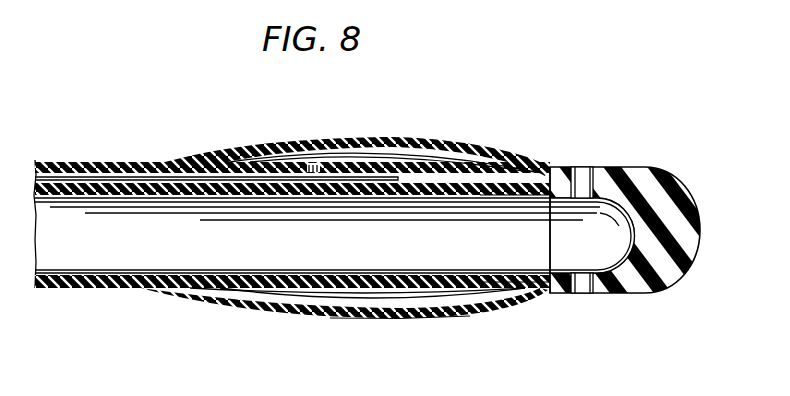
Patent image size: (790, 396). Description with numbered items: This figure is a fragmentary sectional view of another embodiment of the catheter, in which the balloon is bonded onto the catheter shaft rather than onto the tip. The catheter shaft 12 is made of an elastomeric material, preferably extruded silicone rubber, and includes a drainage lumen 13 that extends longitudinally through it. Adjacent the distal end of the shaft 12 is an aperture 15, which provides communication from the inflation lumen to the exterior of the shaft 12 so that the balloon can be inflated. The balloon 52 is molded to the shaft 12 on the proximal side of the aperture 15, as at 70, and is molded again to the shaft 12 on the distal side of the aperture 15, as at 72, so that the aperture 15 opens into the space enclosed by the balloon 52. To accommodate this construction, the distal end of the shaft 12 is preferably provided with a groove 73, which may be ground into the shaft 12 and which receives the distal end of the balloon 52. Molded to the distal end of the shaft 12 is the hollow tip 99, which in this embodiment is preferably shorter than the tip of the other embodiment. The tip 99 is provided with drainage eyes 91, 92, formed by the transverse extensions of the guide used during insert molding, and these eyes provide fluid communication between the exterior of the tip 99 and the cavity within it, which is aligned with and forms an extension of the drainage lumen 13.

The catheter shaft 12 is at (100, 292).
The drainage lumen 13 is at (278, 257).
The aperture 15 is at (313, 166).
The balloon 52 is at (413, 320).
The proximal balloon bond 70 is at (155, 290).
The distal balloon bond 72 is at (530, 165).
The groove 73 is at (497, 196).
The drainage eye 91 is at (575, 295).
The drainage eye 92 is at (578, 169).
The tip 99 is at (640, 295).